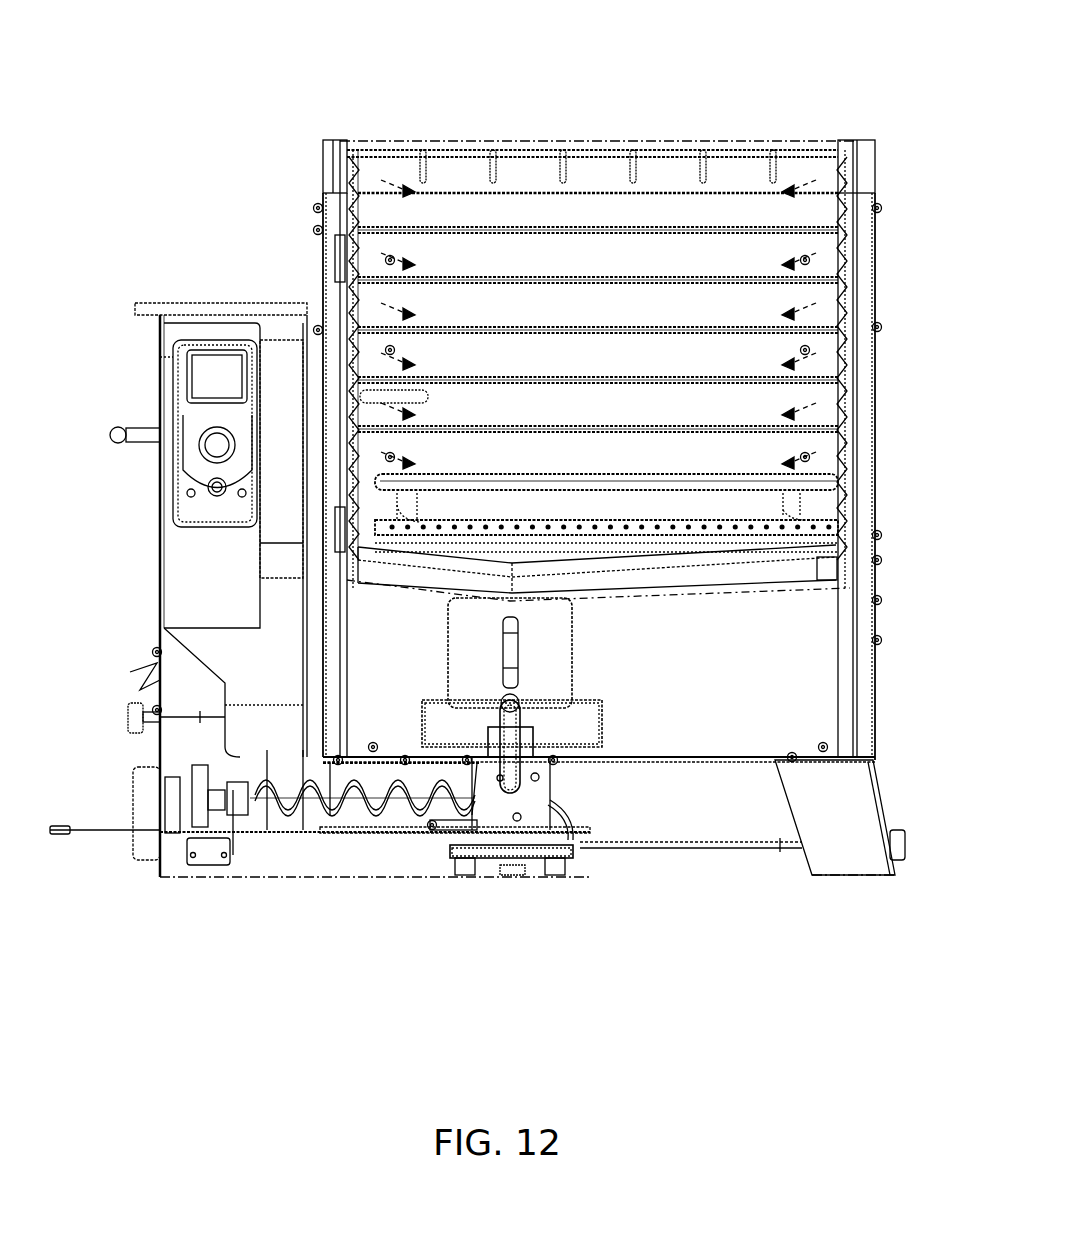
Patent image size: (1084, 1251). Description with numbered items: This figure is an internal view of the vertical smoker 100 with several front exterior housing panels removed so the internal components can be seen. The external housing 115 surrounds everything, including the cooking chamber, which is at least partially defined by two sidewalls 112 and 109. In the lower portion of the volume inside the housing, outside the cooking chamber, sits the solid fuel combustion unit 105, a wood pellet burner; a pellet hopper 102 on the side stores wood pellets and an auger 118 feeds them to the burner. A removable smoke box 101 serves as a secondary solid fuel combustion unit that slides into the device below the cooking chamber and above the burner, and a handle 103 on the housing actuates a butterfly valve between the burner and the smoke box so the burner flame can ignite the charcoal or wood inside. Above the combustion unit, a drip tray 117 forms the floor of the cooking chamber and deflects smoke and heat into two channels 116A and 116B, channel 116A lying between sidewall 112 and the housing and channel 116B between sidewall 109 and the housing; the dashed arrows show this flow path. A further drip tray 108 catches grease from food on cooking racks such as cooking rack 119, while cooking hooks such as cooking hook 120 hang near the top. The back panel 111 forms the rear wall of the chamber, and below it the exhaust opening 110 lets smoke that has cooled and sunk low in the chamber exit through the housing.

The vertical smoker 100 is at (900, 173).
The smoke box 101 is at (573, 623).
The pellet hopper 102 is at (153, 543).
The handle 103 is at (513, 707).
The solid fuel combustion unit 105 is at (537, 813).
The drip tray 108 is at (805, 540).
The sidewall 109 is at (835, 380).
The exhaust opening 110 is at (642, 505).
The back panel 111 is at (490, 305).
The sidewall 112 is at (355, 340).
The external housing 115 is at (325, 263).
The channel 116A is at (353, 157).
The channel 116B is at (842, 158).
The drip tray 117 is at (763, 592).
The auger 118 is at (432, 812).
The cooking rack 119 is at (745, 372).
The cooking hook 120 is at (637, 163).